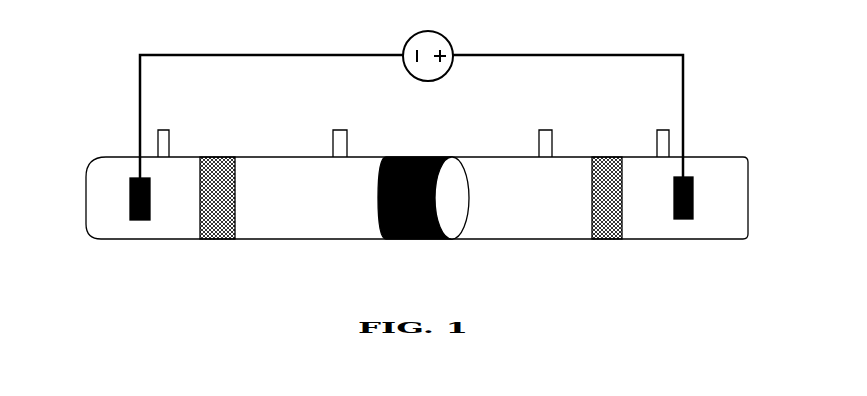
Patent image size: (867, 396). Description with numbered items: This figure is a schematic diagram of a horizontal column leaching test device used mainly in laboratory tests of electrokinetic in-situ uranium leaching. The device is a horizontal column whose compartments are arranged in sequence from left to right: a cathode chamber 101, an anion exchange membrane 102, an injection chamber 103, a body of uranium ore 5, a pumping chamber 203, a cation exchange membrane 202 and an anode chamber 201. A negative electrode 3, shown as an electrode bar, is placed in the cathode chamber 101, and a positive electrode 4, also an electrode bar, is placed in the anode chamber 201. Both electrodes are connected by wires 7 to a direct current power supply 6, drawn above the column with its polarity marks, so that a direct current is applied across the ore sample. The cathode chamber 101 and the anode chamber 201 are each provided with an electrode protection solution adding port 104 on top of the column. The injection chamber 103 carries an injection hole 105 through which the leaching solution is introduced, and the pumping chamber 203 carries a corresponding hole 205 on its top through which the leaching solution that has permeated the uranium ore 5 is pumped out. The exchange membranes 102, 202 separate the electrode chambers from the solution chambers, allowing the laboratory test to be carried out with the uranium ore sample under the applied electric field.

The cathode chamber 101 is at (97, 182).
The anion exchange membrane 102 is at (215, 164).
The injection chamber 103 is at (254, 173).
The electrode protection solution adding ports 104 is at (163, 134).
The injection hole 105 is at (342, 131).
The anode chamber 201 is at (738, 173).
The cation exchange membrane 202 is at (603, 165).
The pumping chamber 203 is at (494, 170).
The second inlet port 205 is at (547, 132).
The negative electrode 3 is at (125, 177).
The positive electrode 4 is at (693, 195).
The uranium ore 5 is at (413, 163).
The direct current power supply 6 is at (435, 32).
The wires 7 is at (282, 55).